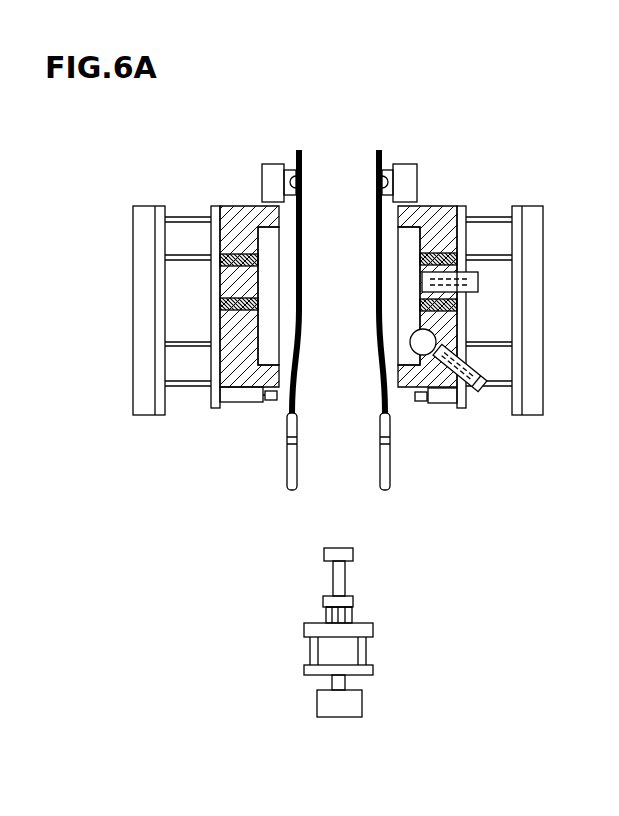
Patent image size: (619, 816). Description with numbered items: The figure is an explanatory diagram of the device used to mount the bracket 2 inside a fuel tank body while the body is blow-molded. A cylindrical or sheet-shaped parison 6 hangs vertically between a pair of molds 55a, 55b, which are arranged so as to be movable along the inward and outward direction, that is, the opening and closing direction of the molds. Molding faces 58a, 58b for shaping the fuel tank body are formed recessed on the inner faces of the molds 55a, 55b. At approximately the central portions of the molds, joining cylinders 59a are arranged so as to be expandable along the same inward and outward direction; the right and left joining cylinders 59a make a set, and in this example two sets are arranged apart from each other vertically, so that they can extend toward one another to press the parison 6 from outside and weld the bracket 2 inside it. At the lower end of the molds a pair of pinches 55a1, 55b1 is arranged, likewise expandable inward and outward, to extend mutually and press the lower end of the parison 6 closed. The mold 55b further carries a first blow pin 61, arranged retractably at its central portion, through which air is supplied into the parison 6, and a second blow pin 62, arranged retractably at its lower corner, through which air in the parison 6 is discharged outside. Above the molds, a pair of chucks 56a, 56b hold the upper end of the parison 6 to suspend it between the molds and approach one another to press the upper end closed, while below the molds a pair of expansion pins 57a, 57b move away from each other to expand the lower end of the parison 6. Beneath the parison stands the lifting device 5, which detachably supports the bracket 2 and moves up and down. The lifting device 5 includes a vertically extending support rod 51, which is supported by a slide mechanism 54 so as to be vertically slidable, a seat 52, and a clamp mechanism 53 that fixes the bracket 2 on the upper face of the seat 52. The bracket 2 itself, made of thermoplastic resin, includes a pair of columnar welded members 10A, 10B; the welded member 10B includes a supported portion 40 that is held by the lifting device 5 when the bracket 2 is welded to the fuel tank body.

The parison 6 is at (299, 150).
The mold 55a is at (143, 206).
The mold 55b is at (536, 206).
The pinch 55a1 is at (241, 402).
The pinch 55b1 is at (437, 403).
The chuck 56a is at (271, 164).
The chuck 56b is at (408, 164).
The expansion pin 57a is at (287, 472).
The expansion pin 57b is at (390, 472).
The molding face 58a is at (262, 232).
The molding face 58b is at (416, 232).
The joining cylinder 59a is at (232, 256).
The first blow pin 61 is at (478, 283).
The second blow pin 62 is at (480, 386).
The bracket 2 is at (383, 560).
The welded member 10A is at (354, 553).
The welded member 10B is at (354, 602).
The supported portion 40 is at (332, 618).
The clamp mechanism 53 is at (320, 607).
The seat 52 is at (302, 648).
The support rod 51 is at (332, 683).
The slide mechanism 54 is at (352, 705).
The lifting device 5 is at (332, 675).